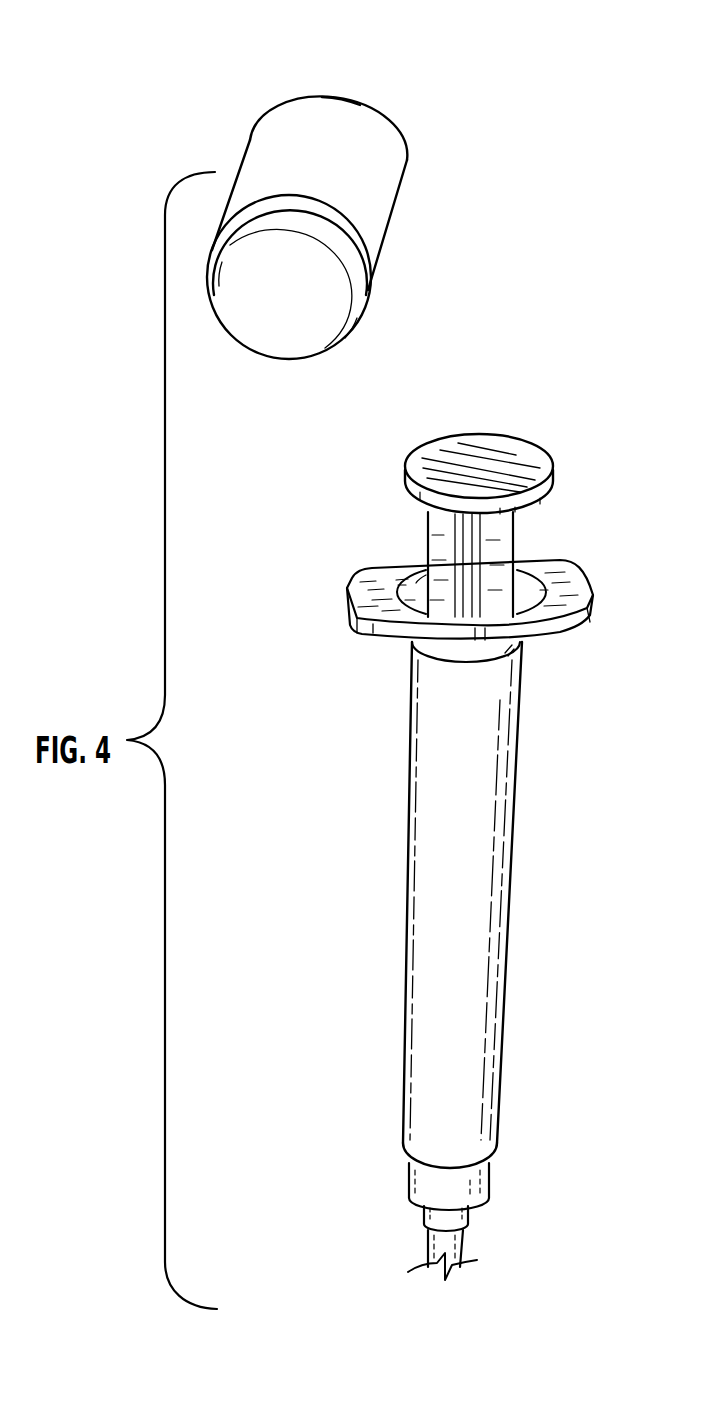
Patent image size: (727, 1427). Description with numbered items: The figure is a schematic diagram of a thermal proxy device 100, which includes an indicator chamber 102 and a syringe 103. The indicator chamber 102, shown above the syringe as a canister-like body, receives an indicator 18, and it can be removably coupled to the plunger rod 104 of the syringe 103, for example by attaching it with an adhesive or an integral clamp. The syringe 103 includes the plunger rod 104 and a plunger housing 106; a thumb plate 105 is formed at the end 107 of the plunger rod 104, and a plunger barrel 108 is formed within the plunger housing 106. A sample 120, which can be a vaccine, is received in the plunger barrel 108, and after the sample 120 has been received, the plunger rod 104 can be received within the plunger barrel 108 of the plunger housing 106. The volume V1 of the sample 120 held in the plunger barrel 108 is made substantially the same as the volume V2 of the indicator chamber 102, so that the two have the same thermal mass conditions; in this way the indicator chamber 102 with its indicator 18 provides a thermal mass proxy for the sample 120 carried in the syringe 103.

The thermal proxy device 100 is at (193, 52).
The indicator 18 is at (333, 130).
The indicator chamber 102 is at (407, 153).
The volume of indicator chamber V2 is at (372, 208).
The plunger rod 104 is at (428, 442).
The thumb plate 105 is at (510, 450).
The end of plunger rod 107 is at (518, 528).
The syringe 103 is at (408, 797).
The plunger barrel 108 is at (500, 757).
The plunger housing 106 is at (513, 810).
The sample 120 is at (478, 942).
The volume of sample V1 is at (388, 1182).